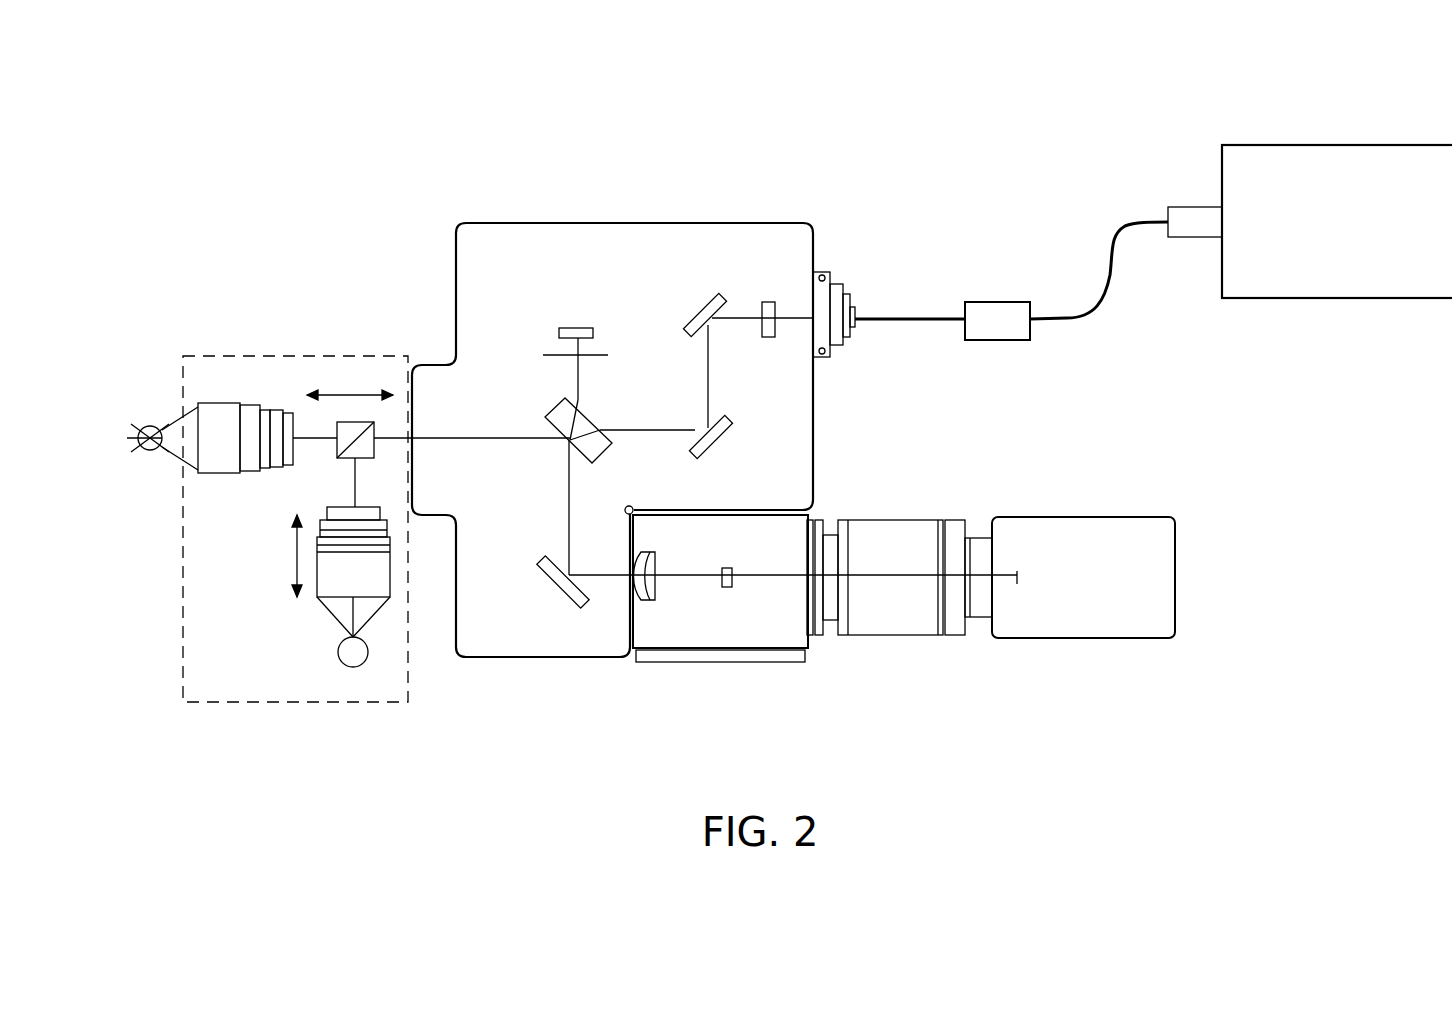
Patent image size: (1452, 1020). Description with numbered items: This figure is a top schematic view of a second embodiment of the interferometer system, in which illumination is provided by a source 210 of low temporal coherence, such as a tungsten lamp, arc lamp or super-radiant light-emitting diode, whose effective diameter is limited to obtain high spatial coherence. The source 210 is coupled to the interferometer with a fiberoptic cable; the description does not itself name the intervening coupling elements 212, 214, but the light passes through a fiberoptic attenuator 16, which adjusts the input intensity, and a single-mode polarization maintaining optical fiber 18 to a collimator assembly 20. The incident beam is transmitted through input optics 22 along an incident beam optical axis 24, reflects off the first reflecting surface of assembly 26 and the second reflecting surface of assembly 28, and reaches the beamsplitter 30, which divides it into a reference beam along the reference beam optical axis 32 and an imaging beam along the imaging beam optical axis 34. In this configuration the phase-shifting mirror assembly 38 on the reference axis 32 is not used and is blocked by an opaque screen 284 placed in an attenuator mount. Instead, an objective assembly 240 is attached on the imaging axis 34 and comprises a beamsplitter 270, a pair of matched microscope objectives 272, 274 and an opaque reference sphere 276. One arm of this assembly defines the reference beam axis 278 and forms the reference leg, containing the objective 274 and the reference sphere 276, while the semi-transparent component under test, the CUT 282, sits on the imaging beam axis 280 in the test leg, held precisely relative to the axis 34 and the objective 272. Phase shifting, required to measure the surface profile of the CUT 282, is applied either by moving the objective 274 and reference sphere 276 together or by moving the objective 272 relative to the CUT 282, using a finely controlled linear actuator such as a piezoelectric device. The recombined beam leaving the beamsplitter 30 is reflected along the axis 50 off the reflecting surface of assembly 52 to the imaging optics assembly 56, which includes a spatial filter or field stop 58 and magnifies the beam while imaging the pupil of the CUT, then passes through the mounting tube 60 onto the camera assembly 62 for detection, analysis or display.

The fiberoptic attenuator 16 is at (1045, 339).
The single-mode polarization maintaining optical fiber 18 is at (897, 317).
The collimator assembly 20 is at (851, 330).
The input optics 22 is at (768, 300).
The incident beam optical axis 24 is at (710, 365).
The first reflecting surface assembly 26 is at (695, 310).
The second reflecting surface assembly 28 is at (722, 447).
The beamsplitter 30 is at (597, 420).
The reference beam optical axis 32 is at (573, 385).
The imaging beam optical axis 34 is at (480, 442).
The phase-shifting mirror assembly 38 is at (578, 327).
The recombined beam axis 50 is at (567, 518).
The reflecting surface assembly 52 is at (556, 590).
The imaging optics assembly 56 is at (677, 672).
The spatial filter 58 is at (772, 572).
The tube 60 is at (892, 525).
The camera assembly 62 is at (1083, 577).
The source 210 is at (1335, 145).
The source to fiber coupler 212 is at (1183, 199).
The single mode PM fiber 214 is at (1114, 232).
The objective assembly 240 is at (172, 668).
The beamsplitter 270 is at (377, 432).
The microscope objective 272 is at (230, 403).
The microscope objective 274 is at (317, 588).
The reference sphere 276 is at (340, 660).
The reference beam axis 278 is at (352, 472).
The imaging beam axis 280 is at (318, 432).
The CUT 282 is at (143, 452).
The opaque screen 284 is at (547, 343).